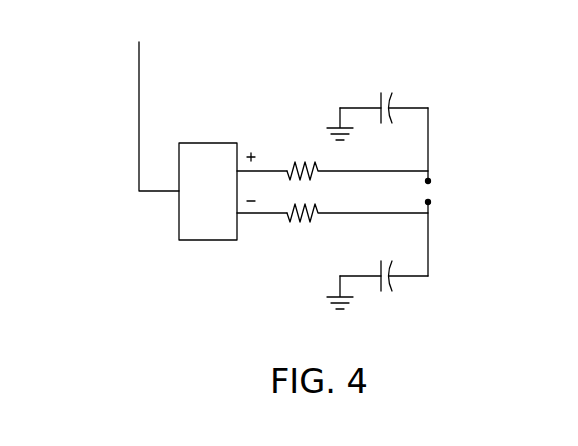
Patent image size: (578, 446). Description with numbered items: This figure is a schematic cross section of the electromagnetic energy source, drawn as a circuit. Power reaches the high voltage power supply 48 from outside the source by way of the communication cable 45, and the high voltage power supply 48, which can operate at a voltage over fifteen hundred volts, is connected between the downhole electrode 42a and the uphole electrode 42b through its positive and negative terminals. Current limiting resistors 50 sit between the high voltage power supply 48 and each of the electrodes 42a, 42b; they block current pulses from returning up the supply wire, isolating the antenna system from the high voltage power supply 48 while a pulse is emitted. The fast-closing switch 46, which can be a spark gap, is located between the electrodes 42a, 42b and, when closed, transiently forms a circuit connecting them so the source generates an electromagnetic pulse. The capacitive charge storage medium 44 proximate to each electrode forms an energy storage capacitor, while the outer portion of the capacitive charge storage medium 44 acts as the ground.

The downhole electrode 42a is at (430, 242).
The uphole electrode 42b is at (430, 135).
The capacitive charge storage medium 44 is at (388, 92).
The communication cable 45 is at (139, 63).
The fast-closing switch 46 is at (432, 190).
The high voltage power supply 48 is at (203, 143).
The current limiting resistors 50 is at (291, 219).